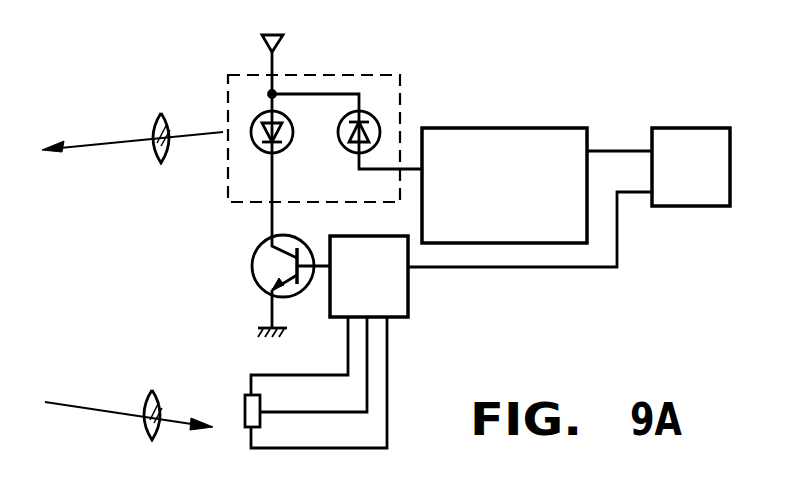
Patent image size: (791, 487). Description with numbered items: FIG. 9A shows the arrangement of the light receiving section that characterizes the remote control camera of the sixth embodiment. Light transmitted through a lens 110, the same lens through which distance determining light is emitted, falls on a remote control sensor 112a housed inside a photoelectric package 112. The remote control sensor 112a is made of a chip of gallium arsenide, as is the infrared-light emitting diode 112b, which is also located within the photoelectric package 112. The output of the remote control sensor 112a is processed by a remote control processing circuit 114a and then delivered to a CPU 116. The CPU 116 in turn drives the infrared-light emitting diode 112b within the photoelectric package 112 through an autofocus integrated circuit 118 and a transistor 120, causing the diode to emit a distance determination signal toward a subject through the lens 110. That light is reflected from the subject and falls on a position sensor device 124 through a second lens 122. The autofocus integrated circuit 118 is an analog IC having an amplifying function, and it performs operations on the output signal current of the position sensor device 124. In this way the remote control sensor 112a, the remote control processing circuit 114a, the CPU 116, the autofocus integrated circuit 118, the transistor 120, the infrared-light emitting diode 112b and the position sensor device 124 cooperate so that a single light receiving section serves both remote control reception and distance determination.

The lens 110 is at (163, 113).
The photoelectric package 112 is at (327, 75).
The remote control sensor 112a is at (380, 124).
The infrared-light emitting diode 112b is at (291, 140).
The remote control processing circuit 114a is at (570, 128).
The CPU 116 is at (718, 128).
The autofocus integrated circuit 118 is at (408, 295).
The transistor 120 is at (252, 268).
The lens 122 is at (154, 392).
The position sensor device 124 is at (245, 410).